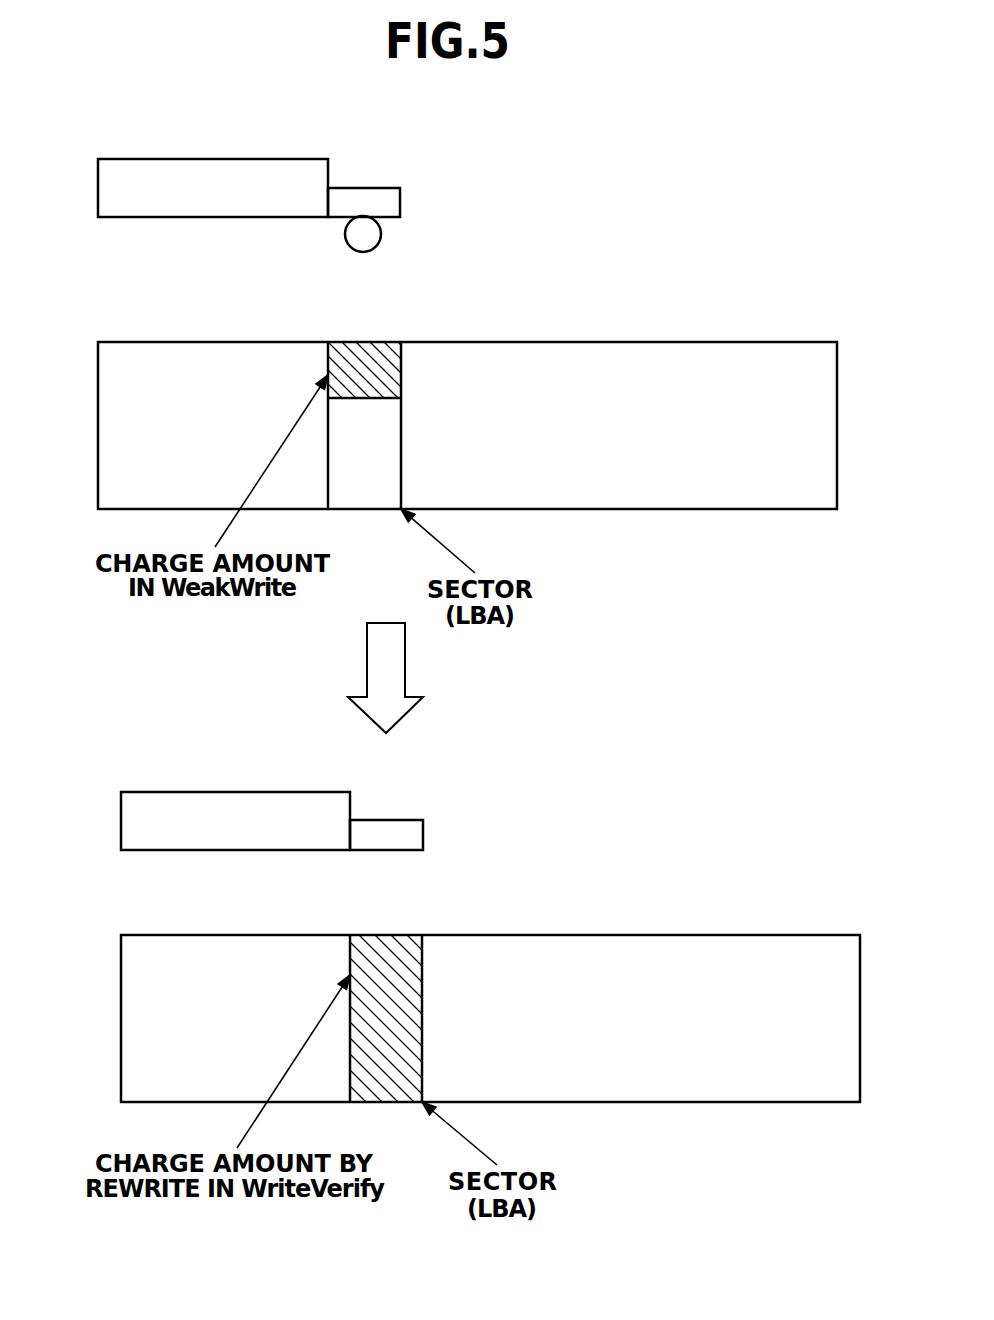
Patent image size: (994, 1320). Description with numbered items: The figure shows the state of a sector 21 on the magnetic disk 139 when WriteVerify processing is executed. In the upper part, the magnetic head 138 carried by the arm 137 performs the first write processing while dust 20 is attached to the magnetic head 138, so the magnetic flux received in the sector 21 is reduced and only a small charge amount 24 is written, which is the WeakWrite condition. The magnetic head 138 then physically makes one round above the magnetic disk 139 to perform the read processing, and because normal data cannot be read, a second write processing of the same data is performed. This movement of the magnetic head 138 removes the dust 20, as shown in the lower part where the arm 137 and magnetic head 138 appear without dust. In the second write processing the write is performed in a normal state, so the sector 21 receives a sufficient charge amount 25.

The arm 137 is at (205, 159).
The magnetic head 138 is at (365, 188).
The dust 20 is at (381, 234).
The magnetic disk 139 is at (613, 342).
The sector 21 is at (365, 342).
The charge amount 24 is at (406, 368).
The charge amount 25 is at (427, 989).